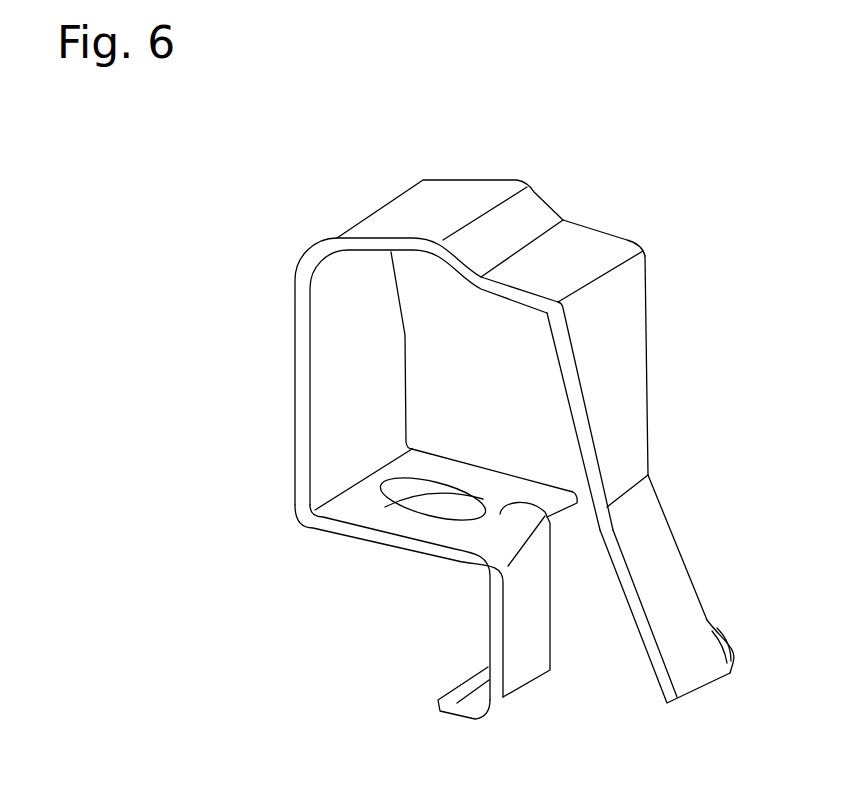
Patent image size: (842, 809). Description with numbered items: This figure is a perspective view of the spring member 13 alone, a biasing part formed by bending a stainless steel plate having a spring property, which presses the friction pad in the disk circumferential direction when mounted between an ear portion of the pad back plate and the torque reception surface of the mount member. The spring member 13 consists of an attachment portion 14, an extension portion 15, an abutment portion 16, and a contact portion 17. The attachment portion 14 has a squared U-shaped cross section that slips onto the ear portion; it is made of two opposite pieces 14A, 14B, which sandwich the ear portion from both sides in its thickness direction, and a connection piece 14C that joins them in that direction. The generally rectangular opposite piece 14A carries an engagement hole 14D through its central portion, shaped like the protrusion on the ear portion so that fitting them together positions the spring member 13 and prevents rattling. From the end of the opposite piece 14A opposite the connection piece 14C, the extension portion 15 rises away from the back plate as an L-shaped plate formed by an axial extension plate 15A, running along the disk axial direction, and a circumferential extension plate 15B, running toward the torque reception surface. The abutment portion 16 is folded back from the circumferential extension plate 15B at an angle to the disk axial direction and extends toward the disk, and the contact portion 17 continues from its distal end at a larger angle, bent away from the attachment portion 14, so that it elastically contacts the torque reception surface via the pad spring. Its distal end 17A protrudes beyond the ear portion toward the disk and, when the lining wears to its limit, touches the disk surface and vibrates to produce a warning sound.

The spring member 13 is at (262, 347).
The attachment portion 14 is at (498, 490).
The opposite piece 14A is at (383, 515).
The opposite piece 14B is at (473, 685).
The connection piece 14C is at (523, 605).
The engagement hole 14D is at (430, 487).
The extension portion 15 is at (398, 218).
The axial extension plate 15A is at (360, 357).
The circumferential extension plate 15B is at (520, 228).
The abutment portion 16 is at (610, 355).
The contact portion 17 is at (660, 572).
The distal end 17A is at (703, 688).